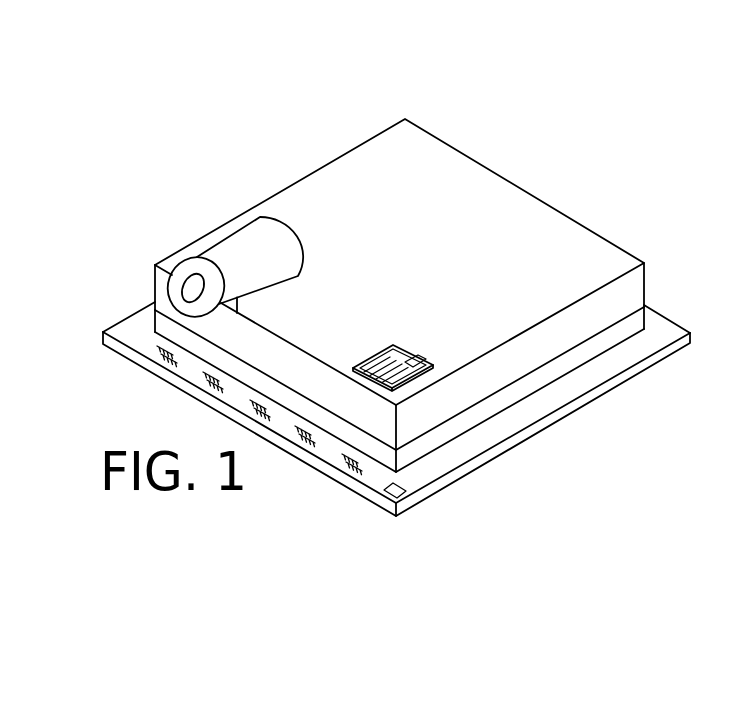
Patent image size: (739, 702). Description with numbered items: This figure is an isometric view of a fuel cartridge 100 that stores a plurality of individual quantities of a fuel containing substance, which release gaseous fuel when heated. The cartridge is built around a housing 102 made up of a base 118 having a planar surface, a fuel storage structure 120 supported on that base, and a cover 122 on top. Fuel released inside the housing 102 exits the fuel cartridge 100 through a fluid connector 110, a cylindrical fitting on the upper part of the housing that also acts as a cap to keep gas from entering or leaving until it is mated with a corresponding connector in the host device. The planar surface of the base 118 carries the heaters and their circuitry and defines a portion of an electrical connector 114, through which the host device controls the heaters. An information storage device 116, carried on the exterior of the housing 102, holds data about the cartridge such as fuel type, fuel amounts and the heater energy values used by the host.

The fuel cartridge 100 is at (414, 283).
The housing 102 is at (399, 285).
The fluid connector 110 is at (288, 231).
The electrical connector 114 is at (467, 495).
The information storage device 116 is at (397, 344).
The base 118 is at (634, 377).
The fuel storage structure 120 is at (431, 364).
The cover 122 is at (597, 233).